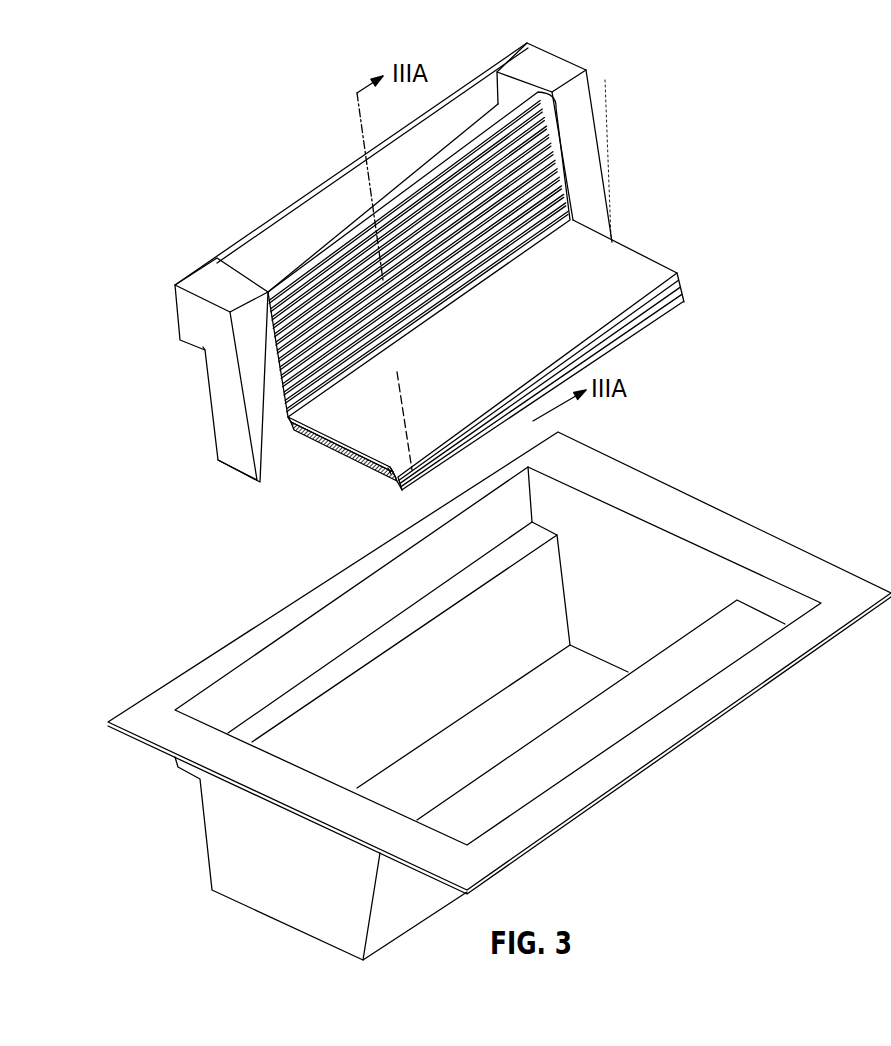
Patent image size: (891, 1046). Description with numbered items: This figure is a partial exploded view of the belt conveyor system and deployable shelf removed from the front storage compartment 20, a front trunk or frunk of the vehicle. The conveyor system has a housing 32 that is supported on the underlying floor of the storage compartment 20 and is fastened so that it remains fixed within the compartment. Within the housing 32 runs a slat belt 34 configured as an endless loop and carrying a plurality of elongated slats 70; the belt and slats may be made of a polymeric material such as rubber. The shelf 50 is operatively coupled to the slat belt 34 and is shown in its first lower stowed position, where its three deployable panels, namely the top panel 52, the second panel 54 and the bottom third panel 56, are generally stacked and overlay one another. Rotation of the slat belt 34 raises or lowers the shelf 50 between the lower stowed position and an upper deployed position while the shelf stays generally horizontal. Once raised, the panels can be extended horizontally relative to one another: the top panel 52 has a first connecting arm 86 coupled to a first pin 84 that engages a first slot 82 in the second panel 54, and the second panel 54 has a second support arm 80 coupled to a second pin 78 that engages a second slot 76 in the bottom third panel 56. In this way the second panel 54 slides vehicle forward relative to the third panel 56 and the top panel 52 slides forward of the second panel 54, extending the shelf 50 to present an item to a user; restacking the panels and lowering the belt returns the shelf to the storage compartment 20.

The front storage compartment 20 is at (658, 578).
The housing 32 is at (582, 127).
The slat belt 34 is at (338, 216).
The shelf 50 is at (581, 343).
The top panel 52 is at (683, 280).
The second panel 54 is at (683, 290).
The bottom third panel 56 is at (667, 305).
The elongated slats 70 is at (550, 144).
The second slot 76 is at (300, 437).
The second pin 78 is at (390, 477).
The second support arm 80 is at (398, 488).
The first slot 82 is at (297, 424).
The first pin 84 is at (390, 472).
The first connecting arm 86 is at (394, 475).